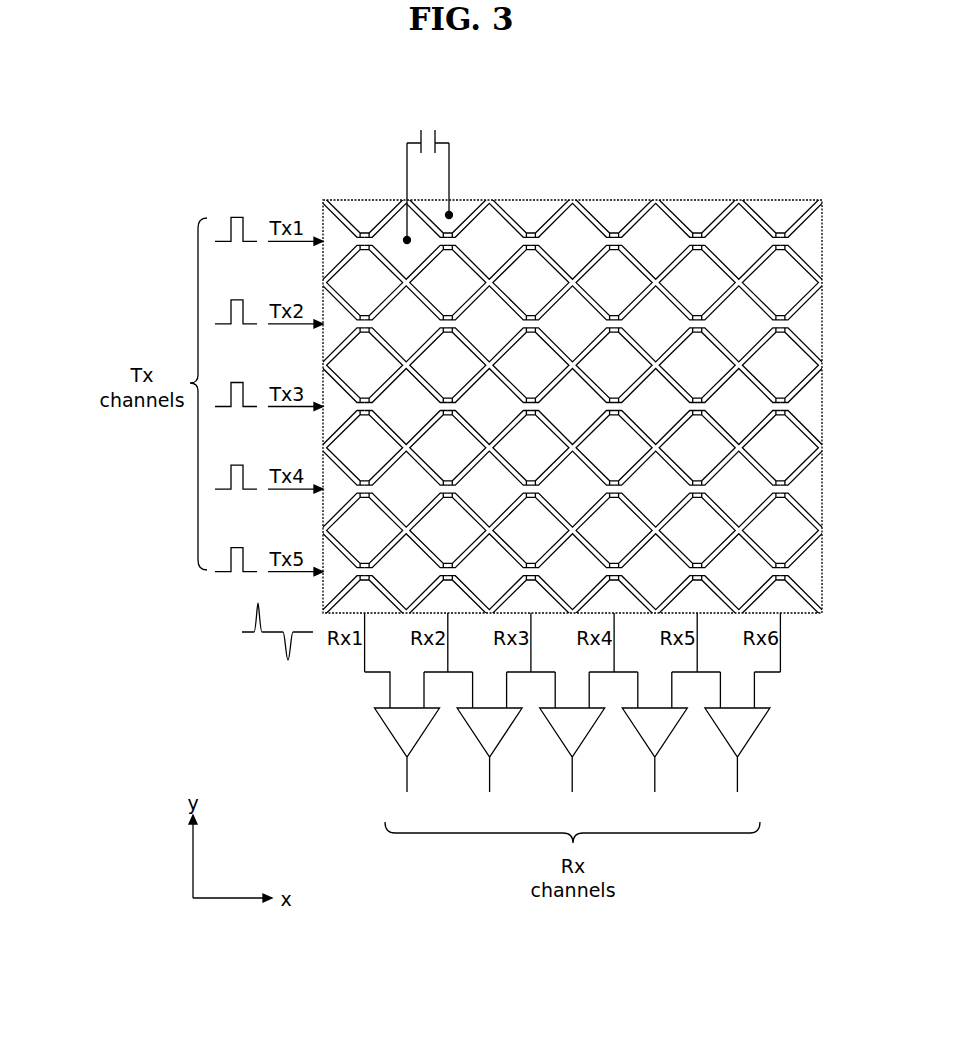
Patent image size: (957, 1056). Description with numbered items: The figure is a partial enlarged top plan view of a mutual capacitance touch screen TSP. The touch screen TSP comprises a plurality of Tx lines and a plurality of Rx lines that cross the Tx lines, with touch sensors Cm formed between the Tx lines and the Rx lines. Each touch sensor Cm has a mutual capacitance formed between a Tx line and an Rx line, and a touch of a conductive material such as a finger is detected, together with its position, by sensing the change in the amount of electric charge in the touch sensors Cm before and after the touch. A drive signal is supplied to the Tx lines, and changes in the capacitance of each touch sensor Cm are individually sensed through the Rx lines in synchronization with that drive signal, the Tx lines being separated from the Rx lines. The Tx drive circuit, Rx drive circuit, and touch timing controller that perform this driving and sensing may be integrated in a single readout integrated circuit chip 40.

The readout integrated circuit (ROIC) chip 40 is at (392, 738).
The mutual capacitance touch screen TSP is at (572, 407).
The touch sensor Cm is at (428, 175).